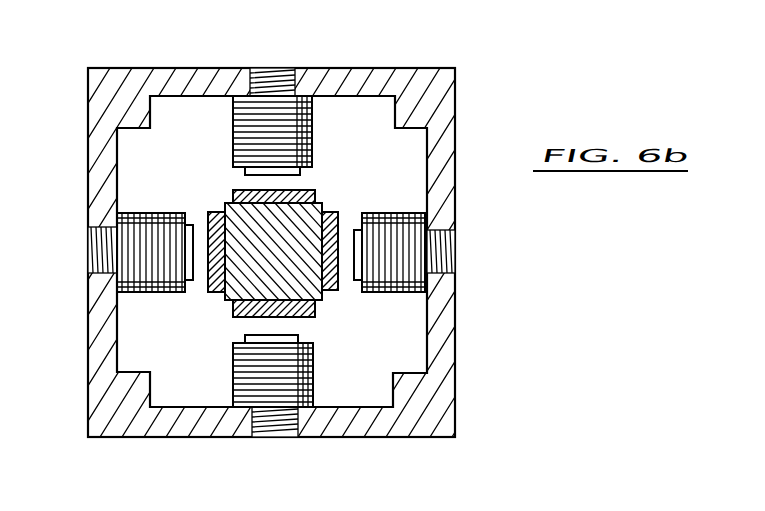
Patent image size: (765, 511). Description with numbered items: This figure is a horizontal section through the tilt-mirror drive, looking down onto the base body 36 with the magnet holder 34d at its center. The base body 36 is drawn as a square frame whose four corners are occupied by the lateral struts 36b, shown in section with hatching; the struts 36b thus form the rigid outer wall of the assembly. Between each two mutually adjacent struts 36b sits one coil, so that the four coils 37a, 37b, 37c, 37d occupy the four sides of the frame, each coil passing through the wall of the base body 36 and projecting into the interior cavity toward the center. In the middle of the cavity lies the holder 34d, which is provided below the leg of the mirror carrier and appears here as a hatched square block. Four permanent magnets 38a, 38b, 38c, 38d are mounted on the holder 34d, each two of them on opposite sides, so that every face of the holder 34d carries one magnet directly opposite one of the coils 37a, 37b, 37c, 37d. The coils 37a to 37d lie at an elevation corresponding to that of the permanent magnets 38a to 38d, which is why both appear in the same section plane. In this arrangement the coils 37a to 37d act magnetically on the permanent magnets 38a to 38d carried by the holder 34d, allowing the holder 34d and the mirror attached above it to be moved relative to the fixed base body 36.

The base body 36 is at (484, 382).
The lateral strut 36b is at (122, 96).
The coil 37a is at (405, 296).
The coil 37b is at (313, 376).
The coil 37c is at (150, 275).
The coil 37d is at (300, 138).
The permanent magnet 38a is at (334, 282).
The permanent magnet 38b is at (235, 312).
The permanent magnet 38c is at (216, 205).
The permanent magnet 38d is at (318, 196).
The holder 34d is at (330, 207).